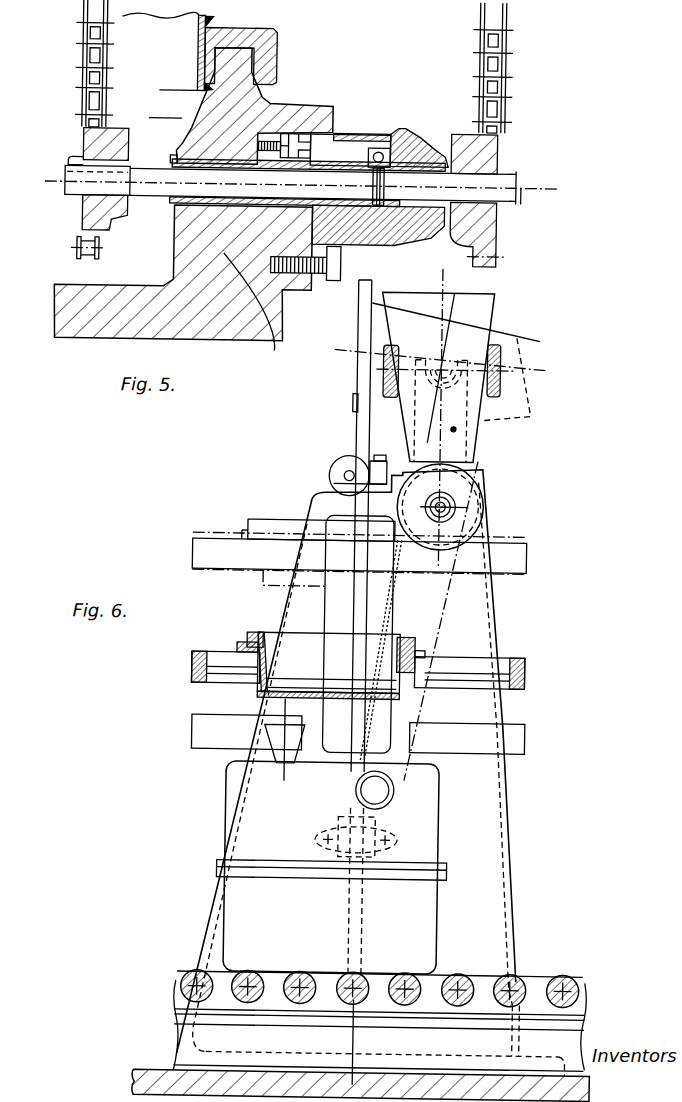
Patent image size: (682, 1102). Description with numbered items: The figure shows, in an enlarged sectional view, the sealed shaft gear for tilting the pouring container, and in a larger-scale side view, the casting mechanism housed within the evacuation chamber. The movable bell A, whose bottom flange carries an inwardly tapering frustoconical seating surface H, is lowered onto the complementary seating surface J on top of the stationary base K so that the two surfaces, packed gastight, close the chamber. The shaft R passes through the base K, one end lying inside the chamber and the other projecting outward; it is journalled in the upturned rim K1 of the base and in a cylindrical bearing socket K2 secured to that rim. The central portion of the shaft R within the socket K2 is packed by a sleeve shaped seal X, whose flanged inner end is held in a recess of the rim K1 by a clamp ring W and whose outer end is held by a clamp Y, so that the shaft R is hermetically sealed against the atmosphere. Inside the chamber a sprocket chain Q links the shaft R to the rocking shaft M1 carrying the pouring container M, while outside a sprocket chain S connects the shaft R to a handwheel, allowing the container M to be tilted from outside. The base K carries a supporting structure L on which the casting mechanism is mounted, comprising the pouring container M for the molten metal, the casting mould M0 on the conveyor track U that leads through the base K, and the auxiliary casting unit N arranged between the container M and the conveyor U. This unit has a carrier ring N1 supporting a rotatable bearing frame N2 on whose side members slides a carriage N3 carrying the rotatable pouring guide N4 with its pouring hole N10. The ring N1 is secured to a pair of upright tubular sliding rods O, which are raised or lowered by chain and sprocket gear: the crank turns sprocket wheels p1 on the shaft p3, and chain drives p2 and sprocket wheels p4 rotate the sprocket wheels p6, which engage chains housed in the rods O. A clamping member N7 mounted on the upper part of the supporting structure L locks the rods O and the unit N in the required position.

In FIG. 5, the sprocket chain Q is at (78, 43).
In FIG. 5, the bell A is at (197, 29).
In FIG. 5, the seating surface H is at (272, 70).
In FIG. 5, the seating surface J is at (266, 90).
In FIG. 5, the clamp ring W is at (290, 134).
In FIG. 5, the sleeve shaped seal X is at (336, 163).
In FIG. 5, the clamp Y is at (388, 134).
In FIG. 5, the sprocket chain S is at (478, 60).
In FIG. 5, the shaft R is at (157, 171).
In FIG. 5, the base K is at (152, 306).
In FIG. 5, the cylindrical bearing socket K2 is at (383, 243).
In FIG. 5, the upturned rim K1 is at (277, 351).
In FIG. 6, the pouring container M is at (482, 311).
In FIG. 6, the rocking shaft M1 is at (510, 338).
In FIG. 6, the sliding rods O is at (352, 420).
In FIG. 6, the clamping member N7 is at (328, 463).
In FIG. 6, the shaft p3 is at (443, 502).
In FIG. 6, the sprocket wheels p1 is at (460, 532).
In FIG. 6, the chain drives p2 is at (388, 599).
In FIG. 6, the pouring guide N4 is at (416, 626).
In FIG. 6, the carriage N3 is at (430, 650).
In FIG. 6, the bearing frame N2 is at (512, 656).
In FIG. 6, the carrier ring N1 is at (521, 679).
In FIG. 6, the auxiliary casting unit N is at (266, 632).
In FIG. 6, the pouring hole N10 is at (285, 682).
In FIG. 6, the sprocket wheels p4 is at (397, 800).
In FIG. 6, the sprocket wheels p6 is at (468, 796).
In FIG. 6, the supporting structure L is at (502, 896).
In FIG. 6, the conveyor track U is at (471, 985).
In FIG. 6, the casting mould M0 is at (331, 867).